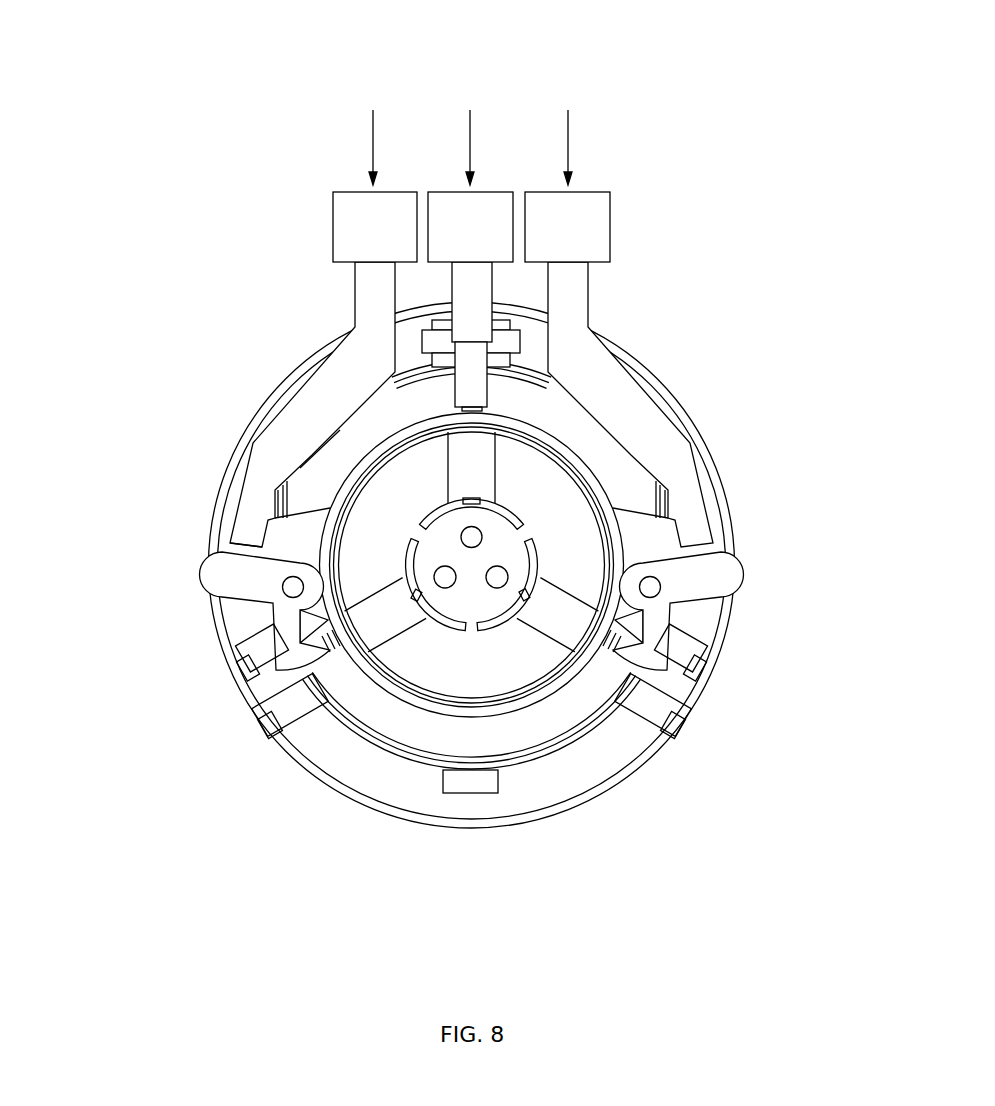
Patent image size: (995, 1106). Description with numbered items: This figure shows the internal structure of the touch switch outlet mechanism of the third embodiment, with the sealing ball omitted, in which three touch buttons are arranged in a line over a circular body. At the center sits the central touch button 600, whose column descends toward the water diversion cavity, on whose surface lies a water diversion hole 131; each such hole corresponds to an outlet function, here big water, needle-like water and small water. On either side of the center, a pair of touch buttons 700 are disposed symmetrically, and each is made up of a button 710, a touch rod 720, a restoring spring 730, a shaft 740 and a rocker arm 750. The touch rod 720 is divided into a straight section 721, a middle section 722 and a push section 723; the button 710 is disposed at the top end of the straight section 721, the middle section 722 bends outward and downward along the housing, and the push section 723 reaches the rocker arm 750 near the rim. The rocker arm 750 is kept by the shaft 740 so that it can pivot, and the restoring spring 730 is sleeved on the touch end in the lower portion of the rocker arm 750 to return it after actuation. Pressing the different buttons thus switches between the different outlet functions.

The water diversion hole 131 is at (472, 537).
The central touch button 600 is at (472, 225).
The touch button 700 is at (582, 230).
The button 710 is at (362, 225).
The touch rod 720 is at (590, 347).
The straight section 721 is at (363, 297).
The middle section 722 is at (338, 383).
The push section 723 is at (268, 520).
The restoring spring 730 is at (338, 643).
The shaft 740 is at (282, 587).
The rocker arm 750 is at (262, 587).